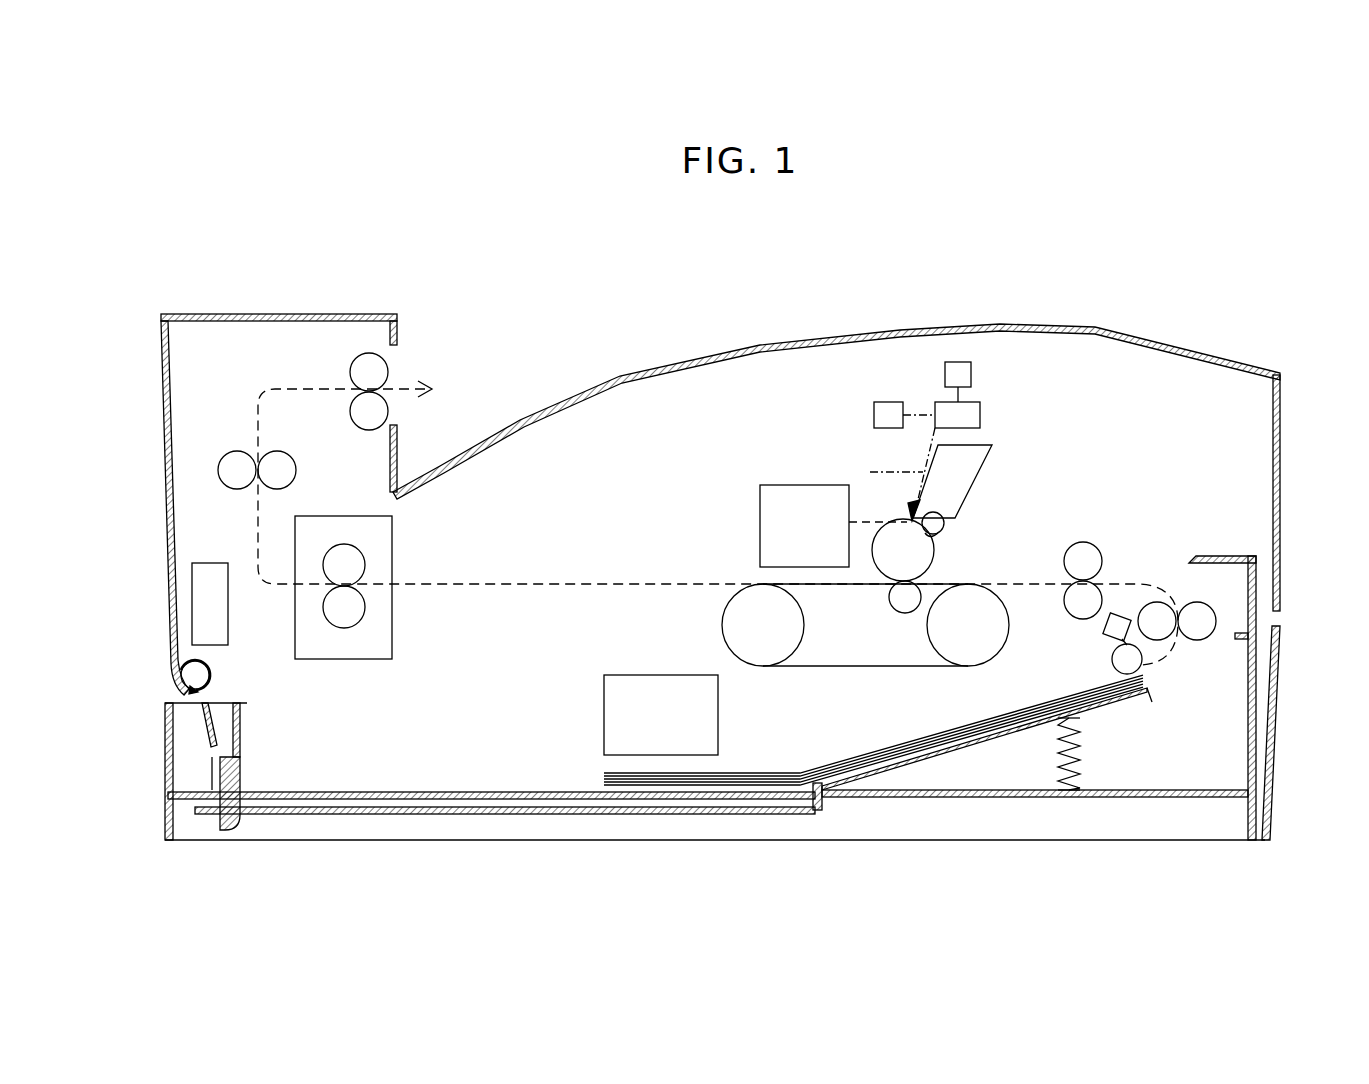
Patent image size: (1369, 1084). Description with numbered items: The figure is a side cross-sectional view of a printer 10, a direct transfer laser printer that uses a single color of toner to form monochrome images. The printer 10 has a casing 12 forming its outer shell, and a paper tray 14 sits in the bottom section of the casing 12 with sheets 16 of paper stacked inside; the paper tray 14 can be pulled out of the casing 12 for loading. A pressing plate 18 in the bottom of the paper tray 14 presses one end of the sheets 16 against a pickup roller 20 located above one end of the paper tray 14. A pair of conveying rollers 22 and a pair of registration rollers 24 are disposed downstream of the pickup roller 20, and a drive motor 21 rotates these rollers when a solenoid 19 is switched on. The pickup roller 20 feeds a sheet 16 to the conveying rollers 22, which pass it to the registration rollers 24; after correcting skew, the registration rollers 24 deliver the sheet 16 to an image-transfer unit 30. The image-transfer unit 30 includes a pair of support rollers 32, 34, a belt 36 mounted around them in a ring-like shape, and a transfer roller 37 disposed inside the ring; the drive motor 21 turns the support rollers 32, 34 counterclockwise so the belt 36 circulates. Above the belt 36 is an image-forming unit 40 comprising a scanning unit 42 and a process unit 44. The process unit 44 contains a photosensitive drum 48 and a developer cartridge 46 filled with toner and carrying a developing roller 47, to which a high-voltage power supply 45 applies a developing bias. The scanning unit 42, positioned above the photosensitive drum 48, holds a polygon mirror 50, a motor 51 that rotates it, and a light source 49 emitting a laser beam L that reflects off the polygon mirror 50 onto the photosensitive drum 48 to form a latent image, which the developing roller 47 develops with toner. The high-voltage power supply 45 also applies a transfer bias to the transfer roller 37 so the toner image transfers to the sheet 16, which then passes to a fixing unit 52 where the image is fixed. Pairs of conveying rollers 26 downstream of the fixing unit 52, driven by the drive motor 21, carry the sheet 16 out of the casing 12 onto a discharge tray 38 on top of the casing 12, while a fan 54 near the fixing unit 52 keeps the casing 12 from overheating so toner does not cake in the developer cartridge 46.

The printer 10 is at (701, 510).
The casing 12 is at (163, 525).
The paper tray 14 is at (1214, 713).
The sheets 16 is at (977, 730).
The pressing plate 18 is at (1120, 700).
The solenoid 19 is at (1105, 636).
The pickup roller 20 is at (1120, 660).
The drive motor 21 is at (655, 675).
The conveying rollers 22 is at (1197, 624).
The registration rollers 24 is at (1100, 553).
The conveying rollers 26 is at (358, 371).
The image-transfer unit 30 is at (888, 550).
The support roller 32 is at (952, 643).
The support roller 34 is at (780, 645).
The belt 36 is at (830, 666).
The transfer roller 37 is at (900, 615).
The discharge tray 38 is at (953, 328).
The image-forming unit 40 is at (981, 434).
The scanning unit 42 is at (969, 389).
The process unit 44 is at (975, 500).
The high-voltage power supply 45 is at (800, 485).
The developer cartridge 46 is at (950, 520).
The developing roller 47 is at (940, 531).
The photosensitive drum 48 is at (908, 557).
The light source 49 is at (880, 402).
The polygon mirror 50 is at (980, 400).
The motor 51 is at (986, 372).
The fixing unit 52 is at (392, 520).
The fan 54 is at (228, 615).
The laser beam L is at (892, 474).